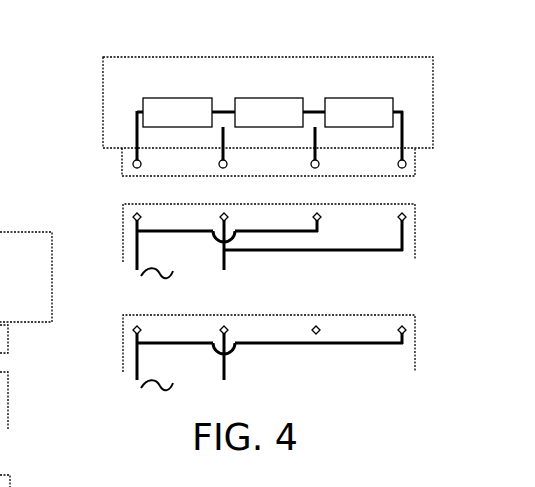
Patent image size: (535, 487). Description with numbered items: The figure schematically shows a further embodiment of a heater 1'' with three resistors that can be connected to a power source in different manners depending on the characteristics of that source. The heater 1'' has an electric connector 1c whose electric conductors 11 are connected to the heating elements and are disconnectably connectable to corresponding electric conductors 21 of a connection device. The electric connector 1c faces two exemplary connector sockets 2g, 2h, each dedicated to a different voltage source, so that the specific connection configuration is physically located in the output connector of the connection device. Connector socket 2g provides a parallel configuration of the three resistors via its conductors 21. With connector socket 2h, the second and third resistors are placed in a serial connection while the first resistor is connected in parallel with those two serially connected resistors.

The heater 1'' is at (229, 92).
The electric conductors 11 is at (135, 123).
The electric connector 1c is at (433, 172).
The connector socket 2g is at (103, 209).
The connector socket 2h is at (108, 364).
The electric conductors 21 is at (320, 220).